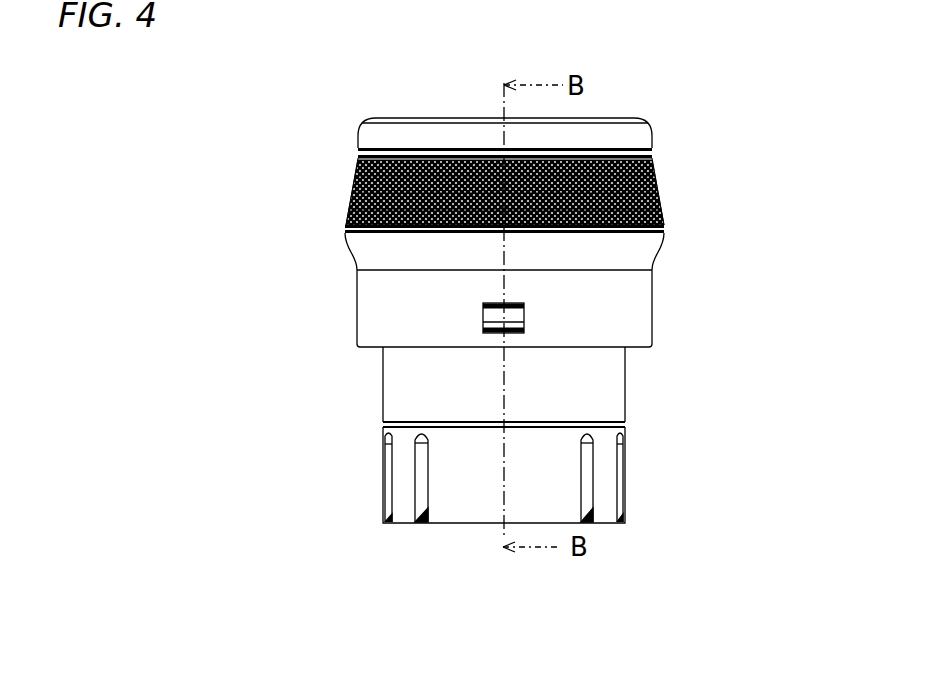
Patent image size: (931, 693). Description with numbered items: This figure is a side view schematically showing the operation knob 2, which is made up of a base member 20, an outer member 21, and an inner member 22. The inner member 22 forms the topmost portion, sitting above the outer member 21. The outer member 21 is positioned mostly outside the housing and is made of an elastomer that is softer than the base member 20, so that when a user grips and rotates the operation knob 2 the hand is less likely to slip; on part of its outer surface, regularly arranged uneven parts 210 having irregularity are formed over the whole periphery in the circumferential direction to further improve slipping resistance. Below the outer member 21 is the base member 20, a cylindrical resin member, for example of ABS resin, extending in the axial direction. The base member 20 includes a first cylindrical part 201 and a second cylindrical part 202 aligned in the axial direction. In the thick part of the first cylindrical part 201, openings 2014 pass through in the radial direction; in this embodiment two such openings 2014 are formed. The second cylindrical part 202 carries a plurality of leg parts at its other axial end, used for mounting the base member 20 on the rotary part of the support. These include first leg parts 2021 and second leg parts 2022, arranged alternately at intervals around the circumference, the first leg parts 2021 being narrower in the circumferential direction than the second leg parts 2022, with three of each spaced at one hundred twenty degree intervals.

The operation knob 2 is at (689, 99).
The inner member 22 is at (407, 125).
The outer member 21 is at (676, 238).
The uneven parts 210 is at (655, 185).
The base member 20 is at (340, 411).
The first cylindrical part 201 is at (380, 310).
The openings 2014 is at (524, 315).
The second cylindrical part 202 is at (603, 393).
The second leg parts 2022 is at (477, 508).
The first leg parts 2021 is at (607, 493).